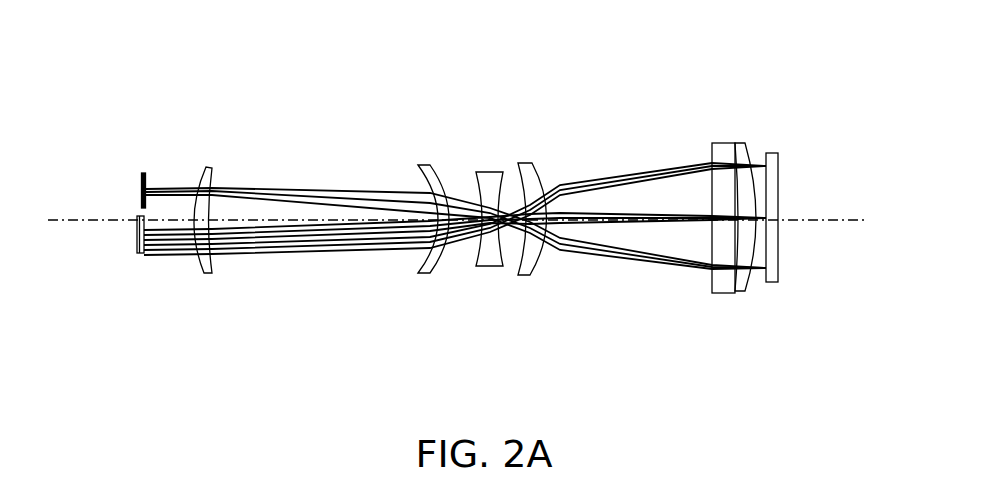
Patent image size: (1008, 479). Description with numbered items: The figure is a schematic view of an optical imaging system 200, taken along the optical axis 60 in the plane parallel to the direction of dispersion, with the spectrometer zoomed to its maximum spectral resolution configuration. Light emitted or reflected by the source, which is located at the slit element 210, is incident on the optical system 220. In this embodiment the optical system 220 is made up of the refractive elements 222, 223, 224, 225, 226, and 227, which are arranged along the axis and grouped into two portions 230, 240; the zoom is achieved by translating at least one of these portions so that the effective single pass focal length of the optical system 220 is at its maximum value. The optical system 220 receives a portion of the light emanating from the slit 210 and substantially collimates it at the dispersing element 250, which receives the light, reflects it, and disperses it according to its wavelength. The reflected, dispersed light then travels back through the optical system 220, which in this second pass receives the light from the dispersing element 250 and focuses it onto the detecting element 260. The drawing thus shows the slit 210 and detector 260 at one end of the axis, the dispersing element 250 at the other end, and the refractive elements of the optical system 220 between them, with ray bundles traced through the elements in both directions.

The optical imaging system 200 is at (150, 84).
The optical axis 60 is at (91, 221).
The slit element 210 is at (141, 175).
The detecting element 260 is at (137, 244).
The optical system 220 is at (183, 320).
The refractive element 222 is at (212, 272).
The first portion of the optical elements 230 is at (503, 160).
The refractive element 223 is at (418, 273).
The refractive element 224 is at (477, 265).
The refractive element 225 is at (538, 272).
The second portion of the optical elements 240 is at (518, 160).
The refractive element 226 is at (712, 277).
The refractive element 227 is at (745, 280).
The dispersing element 250 is at (778, 237).